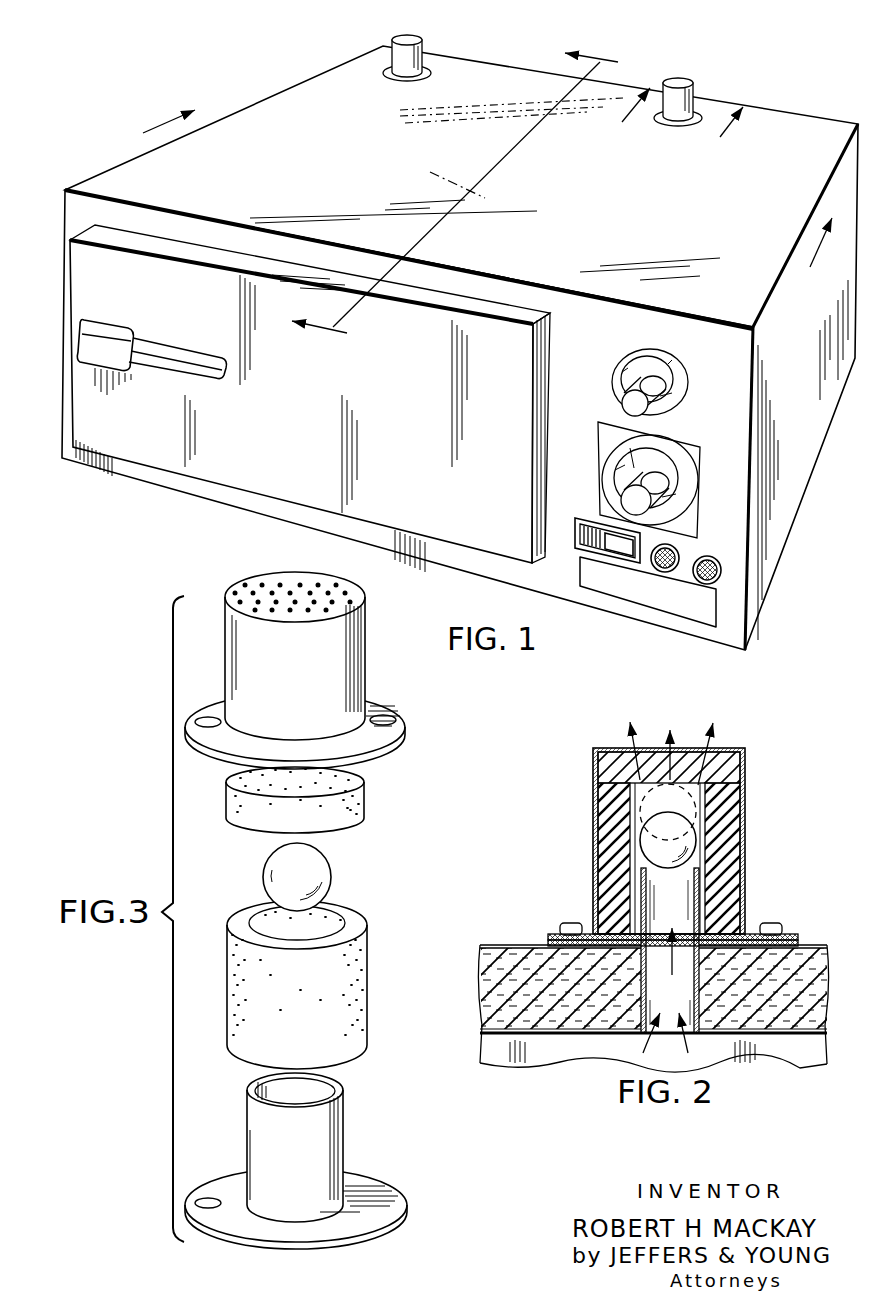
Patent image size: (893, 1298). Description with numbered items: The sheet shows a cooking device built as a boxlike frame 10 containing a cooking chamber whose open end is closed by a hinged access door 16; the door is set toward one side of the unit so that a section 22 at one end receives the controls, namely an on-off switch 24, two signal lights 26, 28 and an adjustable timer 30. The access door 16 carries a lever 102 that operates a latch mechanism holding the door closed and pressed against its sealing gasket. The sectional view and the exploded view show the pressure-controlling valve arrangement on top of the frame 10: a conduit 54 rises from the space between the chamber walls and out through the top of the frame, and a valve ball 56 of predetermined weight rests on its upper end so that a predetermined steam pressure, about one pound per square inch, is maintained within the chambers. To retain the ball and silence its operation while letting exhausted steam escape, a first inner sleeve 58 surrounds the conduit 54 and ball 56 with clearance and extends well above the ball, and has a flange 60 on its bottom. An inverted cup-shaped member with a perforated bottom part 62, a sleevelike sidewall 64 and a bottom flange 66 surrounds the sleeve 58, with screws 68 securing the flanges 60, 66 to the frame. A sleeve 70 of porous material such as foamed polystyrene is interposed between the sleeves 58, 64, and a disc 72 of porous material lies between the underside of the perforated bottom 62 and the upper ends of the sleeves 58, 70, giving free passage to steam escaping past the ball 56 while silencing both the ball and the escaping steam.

In FIG. 1, the boxlike frame 10 is at (332, 93).
In FIG. 2, the boxlike frame 10 is at (490, 945).
In FIG. 1, the access door 16 is at (257, 455).
In FIG. 1, the section of the unit 22 is at (703, 368).
In FIG. 1, the on-off switch 24 is at (617, 550).
In FIG. 1, the signal light 26 is at (662, 572).
In FIG. 1, the signal light 28 is at (706, 585).
In FIG. 1, the adjustable timer 30 is at (668, 496).
In FIG. 1, the lever 102 is at (158, 367).
In FIG. 2, the conduit 54 is at (640, 1003).
In FIG. 3, the valve ball 56 is at (325, 878).
In FIG. 2, the valve ball 56 is at (690, 840).
In FIG. 3, the first inner sleeve 58 is at (338, 1128).
In FIG. 2, the first inner sleeve 58 is at (703, 803).
In FIG. 3, the flange 60 is at (390, 1190).
In FIG. 2, the flange 60 is at (798, 943).
In FIG. 3, the perforated bottom part 62 is at (278, 572).
In FIG. 2, the perforated bottom part 62 is at (700, 784).
In FIG. 3, the sleevelike sidewall 64 is at (317, 636).
In FIG. 2, the sleevelike sidewall 64 is at (746, 877).
In FIG. 3, the bottom flange 66 is at (398, 728).
In FIG. 2, the bottom flange 66 is at (790, 934).
In FIG. 2, the screws 68 is at (558, 928).
In FIG. 3, the sleeve of porous material 70 is at (355, 980).
In FIG. 2, the sleeve of porous material 70 is at (603, 837).
In FIG. 3, the disc of porous material 72 is at (365, 810).
In FIG. 2, the disc of porous material 72 is at (598, 768).